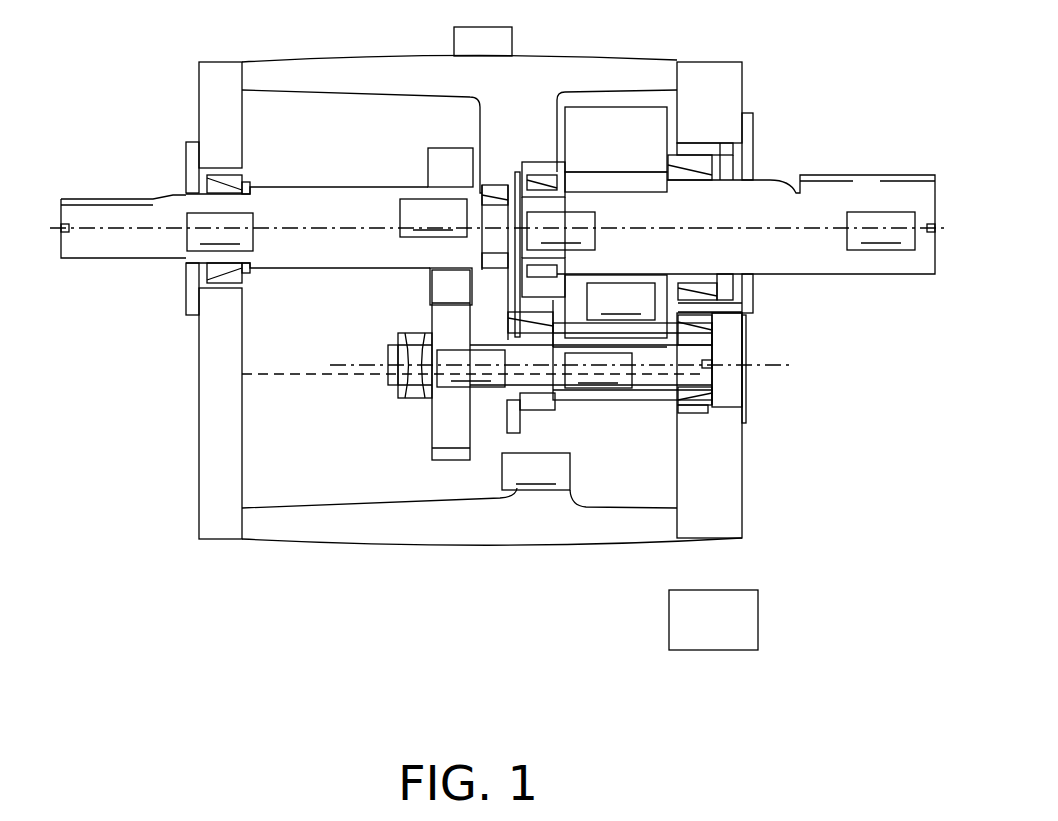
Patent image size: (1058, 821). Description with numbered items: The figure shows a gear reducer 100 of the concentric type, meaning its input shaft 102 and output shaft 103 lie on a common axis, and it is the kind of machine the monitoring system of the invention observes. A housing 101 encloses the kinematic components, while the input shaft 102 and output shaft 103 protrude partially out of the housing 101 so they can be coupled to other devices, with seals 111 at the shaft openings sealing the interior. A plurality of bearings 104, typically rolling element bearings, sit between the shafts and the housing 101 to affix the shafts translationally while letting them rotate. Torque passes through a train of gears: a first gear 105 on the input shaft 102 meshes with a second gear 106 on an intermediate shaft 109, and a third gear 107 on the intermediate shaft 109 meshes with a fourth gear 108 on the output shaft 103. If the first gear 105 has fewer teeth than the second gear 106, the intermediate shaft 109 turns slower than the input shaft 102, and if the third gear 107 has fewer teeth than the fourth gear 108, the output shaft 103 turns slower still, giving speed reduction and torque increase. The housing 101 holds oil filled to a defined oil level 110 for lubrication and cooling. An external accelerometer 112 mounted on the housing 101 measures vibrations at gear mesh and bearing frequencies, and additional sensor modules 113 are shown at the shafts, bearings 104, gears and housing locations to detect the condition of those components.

The gear reducer 100 is at (150, 592).
The housing 101 is at (210, 79).
The input shaft 102 is at (133, 243).
The output shaft 103 is at (828, 262).
The bearings 104 is at (231, 180).
The first gear 105 is at (440, 172).
The second gear 106 is at (442, 438).
The third gear 107 is at (649, 393).
The fourth gear 108 is at (614, 128).
The intermediate shaft 109 is at (590, 403).
The oil level 110 is at (313, 375).
The seals 111 is at (186, 172).
The accelerometer 112 is at (465, 43).
The sensor module 113 is at (692, 632).